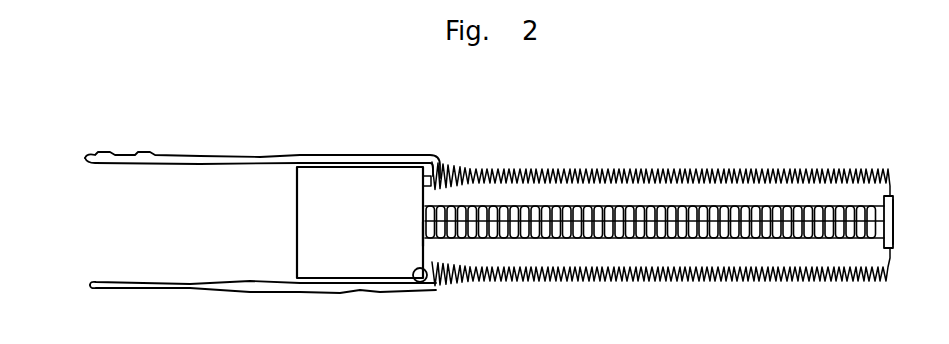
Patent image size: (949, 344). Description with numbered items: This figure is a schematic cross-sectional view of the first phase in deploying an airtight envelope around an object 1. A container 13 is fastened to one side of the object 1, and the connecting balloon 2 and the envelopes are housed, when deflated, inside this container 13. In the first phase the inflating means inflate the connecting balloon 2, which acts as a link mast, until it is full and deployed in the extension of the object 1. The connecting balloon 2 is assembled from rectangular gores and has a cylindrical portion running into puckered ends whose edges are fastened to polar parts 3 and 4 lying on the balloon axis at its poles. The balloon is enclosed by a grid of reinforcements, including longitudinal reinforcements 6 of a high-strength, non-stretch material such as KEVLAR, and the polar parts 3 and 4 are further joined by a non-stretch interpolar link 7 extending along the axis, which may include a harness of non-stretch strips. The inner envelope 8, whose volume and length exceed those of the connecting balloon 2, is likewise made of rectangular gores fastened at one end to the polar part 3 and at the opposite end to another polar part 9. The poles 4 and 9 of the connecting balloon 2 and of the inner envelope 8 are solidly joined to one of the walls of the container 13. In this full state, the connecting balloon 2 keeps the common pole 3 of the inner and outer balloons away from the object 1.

The object 1 is at (347, 182).
The connecting balloon 2 is at (866, 216).
The polar part 3 is at (893, 240).
The polar part 4 is at (423, 234).
The longitudinal reinforcements 6 is at (721, 205).
The interpolar link 7 is at (747, 237).
The inner envelope 8 is at (618, 178).
The polar part 9 is at (424, 282).
The container 13 is at (425, 186).